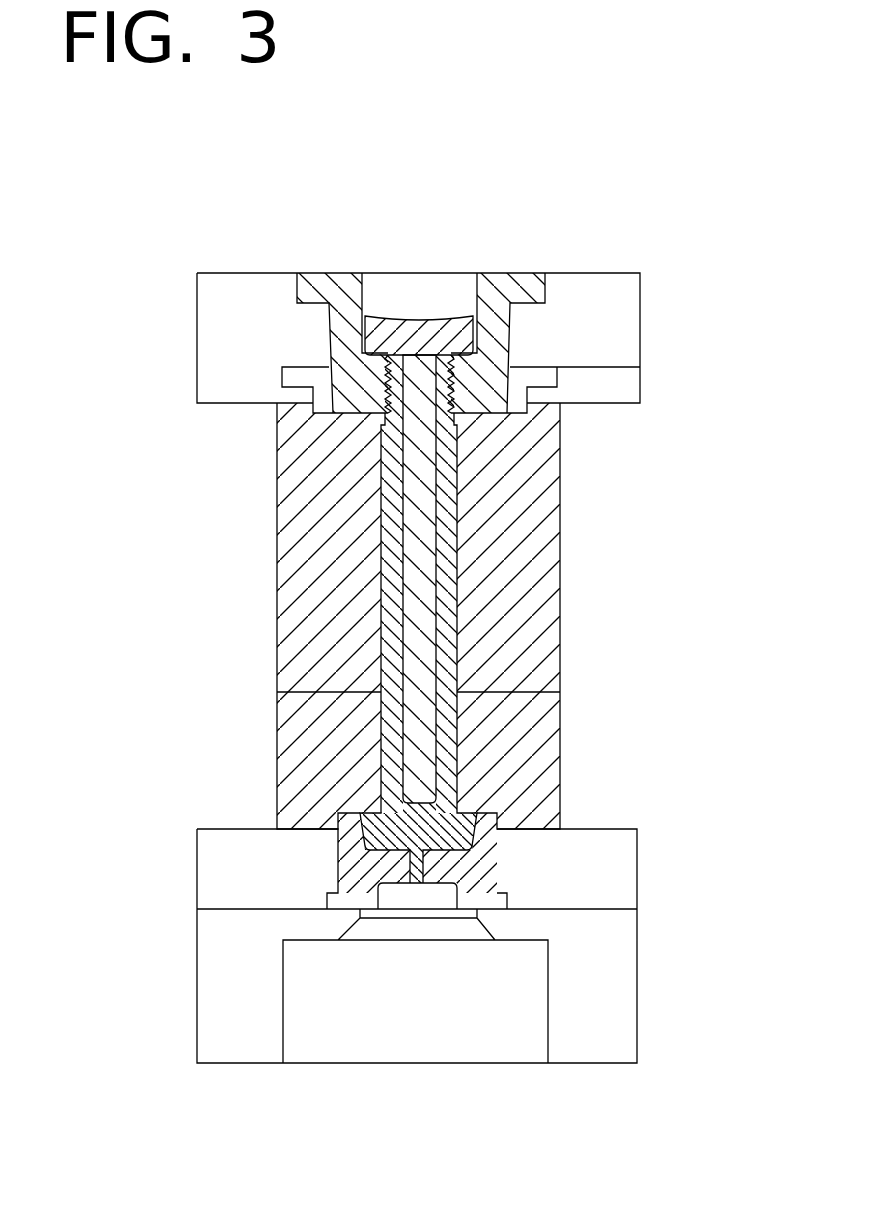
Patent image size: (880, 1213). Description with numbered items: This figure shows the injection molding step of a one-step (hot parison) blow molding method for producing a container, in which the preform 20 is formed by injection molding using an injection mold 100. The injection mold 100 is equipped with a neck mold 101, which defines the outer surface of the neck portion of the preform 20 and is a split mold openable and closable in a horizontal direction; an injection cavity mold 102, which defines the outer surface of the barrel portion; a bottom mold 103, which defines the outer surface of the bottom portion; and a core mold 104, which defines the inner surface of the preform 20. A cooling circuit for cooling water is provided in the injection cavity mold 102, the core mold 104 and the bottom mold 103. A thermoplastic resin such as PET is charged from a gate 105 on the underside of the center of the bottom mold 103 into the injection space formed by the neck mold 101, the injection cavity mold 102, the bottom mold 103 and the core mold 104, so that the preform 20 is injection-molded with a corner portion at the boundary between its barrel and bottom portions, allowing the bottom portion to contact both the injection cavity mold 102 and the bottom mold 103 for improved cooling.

The injection mold 100 is at (637, 205).
The neck mold 101 is at (504, 283).
The preform 20 is at (442, 535).
The injection cavity mold 102 is at (528, 617).
The core mold 104 is at (440, 668).
The bottom mold 103 is at (478, 875).
The gate 105 is at (413, 892).